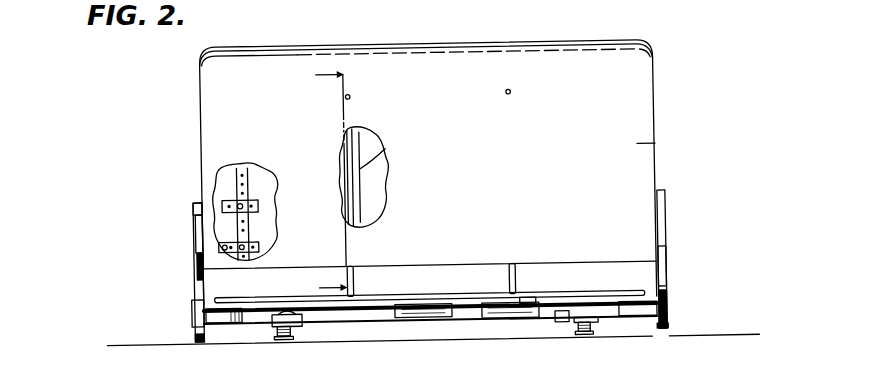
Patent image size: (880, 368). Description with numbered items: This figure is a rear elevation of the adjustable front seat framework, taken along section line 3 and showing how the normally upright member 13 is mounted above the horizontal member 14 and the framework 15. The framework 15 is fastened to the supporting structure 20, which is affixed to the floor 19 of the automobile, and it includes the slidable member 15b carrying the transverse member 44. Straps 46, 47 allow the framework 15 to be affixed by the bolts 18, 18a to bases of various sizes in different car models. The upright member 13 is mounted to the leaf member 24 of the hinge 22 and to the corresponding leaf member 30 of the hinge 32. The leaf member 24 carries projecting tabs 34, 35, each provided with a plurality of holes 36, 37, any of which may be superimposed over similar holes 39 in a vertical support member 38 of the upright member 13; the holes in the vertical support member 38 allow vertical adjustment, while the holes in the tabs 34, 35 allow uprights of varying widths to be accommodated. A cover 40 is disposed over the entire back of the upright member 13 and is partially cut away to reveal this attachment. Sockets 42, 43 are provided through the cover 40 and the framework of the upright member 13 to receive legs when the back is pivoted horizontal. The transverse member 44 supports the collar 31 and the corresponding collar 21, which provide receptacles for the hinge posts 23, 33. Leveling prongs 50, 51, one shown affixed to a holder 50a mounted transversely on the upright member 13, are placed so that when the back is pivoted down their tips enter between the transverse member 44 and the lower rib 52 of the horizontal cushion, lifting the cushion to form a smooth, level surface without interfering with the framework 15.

The section line 3- 3 is at (322, 183).
The upright member 13 is at (655, 47).
The horizontal member 14 is at (415, 288).
The framework 15 is at (468, 321).
The member 15b is at (228, 321).
The bolt 18 is at (275, 317).
The bolt 18a is at (596, 325).
The floor 19 is at (745, 339).
The supporting structure 20 is at (274, 338).
The collar 21 is at (191, 313).
The hinge 22 is at (193, 274).
The hinge post 23 is at (195, 329).
The leaf member 24 is at (194, 224).
The leaf member 30 is at (661, 228).
The collar 31 is at (665, 298).
The hinge 32 is at (664, 267).
The hinge post 33 is at (666, 327).
The projecting tab 34 is at (194, 199).
The projecting tab 35 is at (197, 254).
The hole 36 is at (222, 205).
The hole 37 is at (258, 244).
The vertical support member 38 is at (262, 178).
The holes 39 is at (247, 217).
The cover 40 is at (656, 147).
The socket 42 is at (350, 93).
The socket 43 is at (510, 91).
The transverse member 44 is at (505, 323).
The strap 46 is at (297, 320).
The strap 47 is at (558, 324).
The leveling prong 50 is at (360, 266).
The holder 50a is at (386, 143).
The leveling prong 51 is at (520, 268).
The lower rib 52 is at (460, 296).